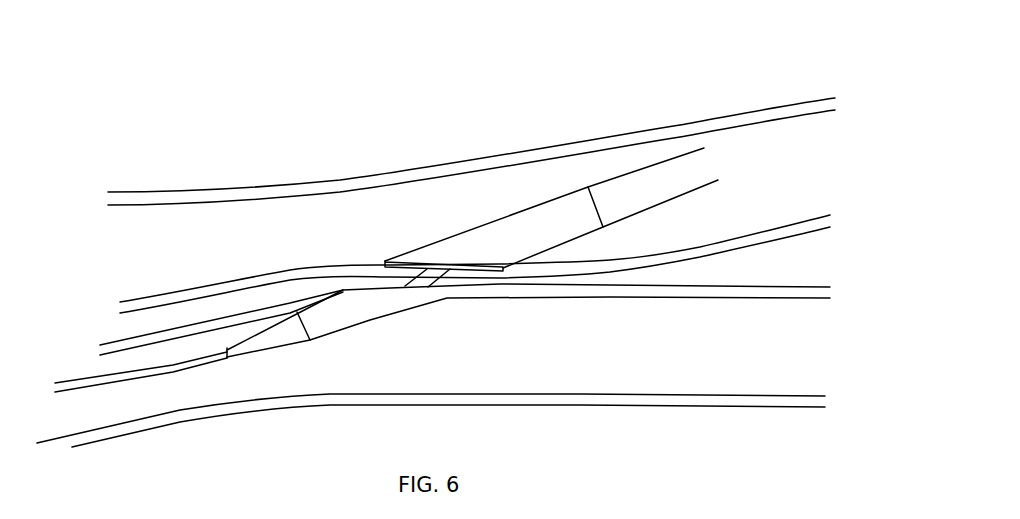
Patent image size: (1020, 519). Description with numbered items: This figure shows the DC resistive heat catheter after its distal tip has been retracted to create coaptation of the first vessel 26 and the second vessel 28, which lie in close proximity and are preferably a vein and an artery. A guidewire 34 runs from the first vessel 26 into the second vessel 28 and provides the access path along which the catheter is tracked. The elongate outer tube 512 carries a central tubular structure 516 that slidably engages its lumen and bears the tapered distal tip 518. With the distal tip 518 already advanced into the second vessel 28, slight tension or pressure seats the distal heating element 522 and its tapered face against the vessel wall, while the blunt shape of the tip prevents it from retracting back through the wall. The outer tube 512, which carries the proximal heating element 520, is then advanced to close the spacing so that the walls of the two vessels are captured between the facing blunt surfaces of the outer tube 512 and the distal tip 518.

The first vessel 26 is at (755, 110).
The second vessel 28 is at (133, 437).
The guidewire 34 is at (177, 367).
The elongate outer tube 512 is at (532, 213).
The tubular structure 516 is at (428, 277).
The distal tip 518 is at (344, 327).
The proximal heating element 520 is at (465, 270).
The distal heating element 522 is at (371, 277).